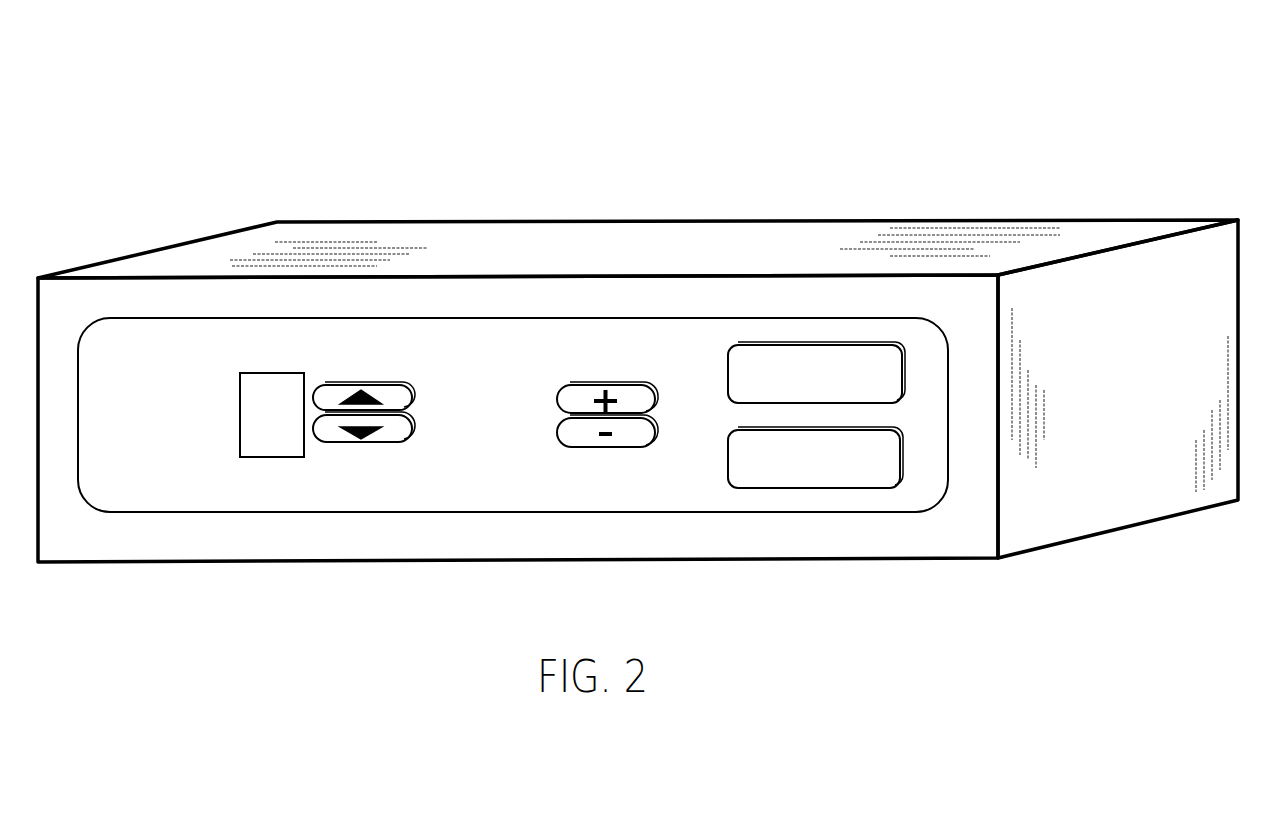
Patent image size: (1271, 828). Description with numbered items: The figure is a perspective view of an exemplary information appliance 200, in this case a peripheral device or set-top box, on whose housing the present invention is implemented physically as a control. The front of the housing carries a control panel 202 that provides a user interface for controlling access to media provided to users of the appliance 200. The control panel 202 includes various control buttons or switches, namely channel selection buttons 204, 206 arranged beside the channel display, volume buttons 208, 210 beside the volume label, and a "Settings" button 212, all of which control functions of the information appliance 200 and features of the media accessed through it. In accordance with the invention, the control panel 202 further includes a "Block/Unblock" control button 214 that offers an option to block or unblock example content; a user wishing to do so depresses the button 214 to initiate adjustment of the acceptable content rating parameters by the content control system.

The information appliance 200 is at (1149, 161).
The control panel 202 is at (626, 318).
The channel selection button 204 is at (413, 388).
The channel selection button 206 is at (387, 443).
The volume button 208 is at (655, 388).
The volume button 210 is at (655, 432).
The Settings button 212 is at (810, 488).
The Block/Unblock control button 214 is at (905, 365).